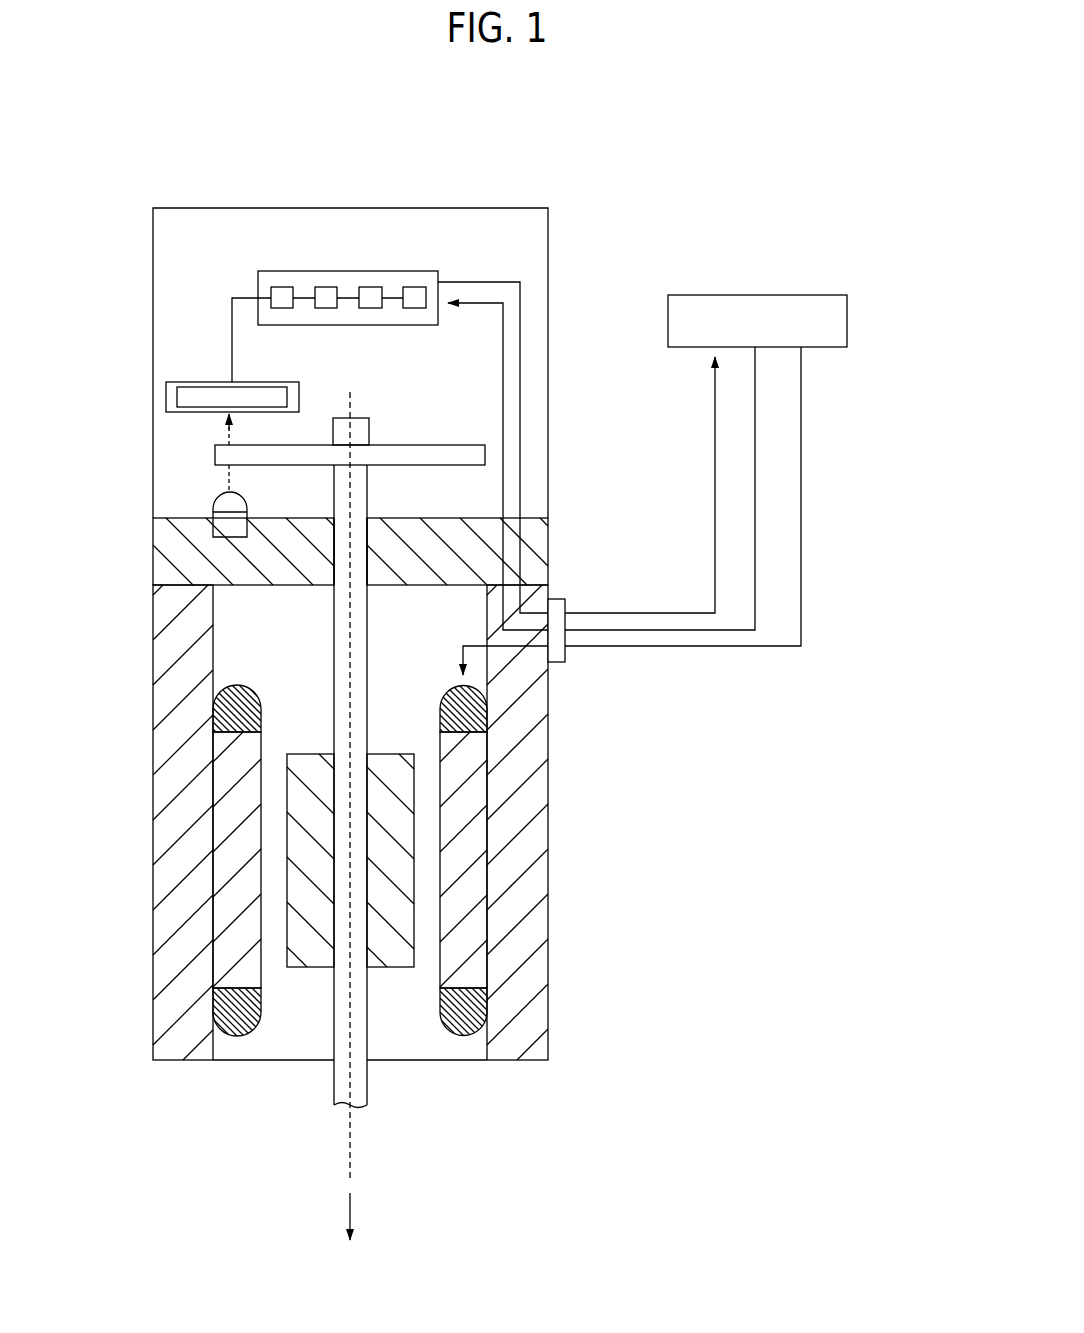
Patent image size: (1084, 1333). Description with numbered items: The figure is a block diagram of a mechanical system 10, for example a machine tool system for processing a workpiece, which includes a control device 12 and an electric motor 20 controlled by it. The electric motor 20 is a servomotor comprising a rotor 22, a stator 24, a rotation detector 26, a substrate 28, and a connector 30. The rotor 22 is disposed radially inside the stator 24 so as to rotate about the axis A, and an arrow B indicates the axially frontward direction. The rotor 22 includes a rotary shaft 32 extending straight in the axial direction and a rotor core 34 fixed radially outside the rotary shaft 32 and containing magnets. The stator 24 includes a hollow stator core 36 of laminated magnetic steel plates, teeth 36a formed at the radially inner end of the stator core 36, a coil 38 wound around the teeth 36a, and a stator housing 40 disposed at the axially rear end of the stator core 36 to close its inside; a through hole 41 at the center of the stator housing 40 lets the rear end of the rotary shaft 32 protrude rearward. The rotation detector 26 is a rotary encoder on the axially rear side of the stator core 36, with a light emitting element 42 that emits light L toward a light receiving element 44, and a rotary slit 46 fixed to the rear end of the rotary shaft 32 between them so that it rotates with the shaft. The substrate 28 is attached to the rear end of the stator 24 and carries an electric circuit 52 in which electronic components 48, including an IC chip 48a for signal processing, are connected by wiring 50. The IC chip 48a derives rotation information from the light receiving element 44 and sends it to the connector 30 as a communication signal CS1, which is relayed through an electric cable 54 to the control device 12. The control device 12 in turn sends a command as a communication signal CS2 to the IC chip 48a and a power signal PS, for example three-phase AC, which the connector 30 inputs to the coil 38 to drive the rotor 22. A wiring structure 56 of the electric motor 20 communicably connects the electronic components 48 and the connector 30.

The mechanical system 10 is at (732, 111).
The control device 12 is at (806, 295).
The electric motor 20 is at (155, 152).
The rotor 22 is at (390, 1094).
The stator 24 is at (593, 920).
The rotation detector 26 is at (190, 365).
The substrate 28 is at (400, 282).
The connector 30 is at (565, 662).
The rotary shaft 32 is at (372, 633).
The rotor core 34 is at (305, 755).
The stator core 36 is at (165, 802).
The teeth 36a is at (252, 872).
The coil 38 is at (238, 686).
The stator housing 40 is at (165, 547).
The through hole 41 is at (366, 538).
The light emitting element 42 is at (213, 500).
The light receiving element 44 is at (166, 397).
The rotary slit 46 is at (435, 445).
The electronic components 48 is at (370, 326).
The IC chip 48a is at (326, 282).
The wiring 50 is at (302, 282).
The electric circuit 52 is at (350, 266).
The electric cable 54 is at (838, 526).
The wiring structure 56 is at (538, 455).
The communication signal CS1 is at (520, 337).
The communication signal CS2 is at (503, 383).
The power signal PS is at (527, 652).
The light L is at (230, 478).
The rotational axis A is at (350, 1157).
The arrow B is at (334, 1216).